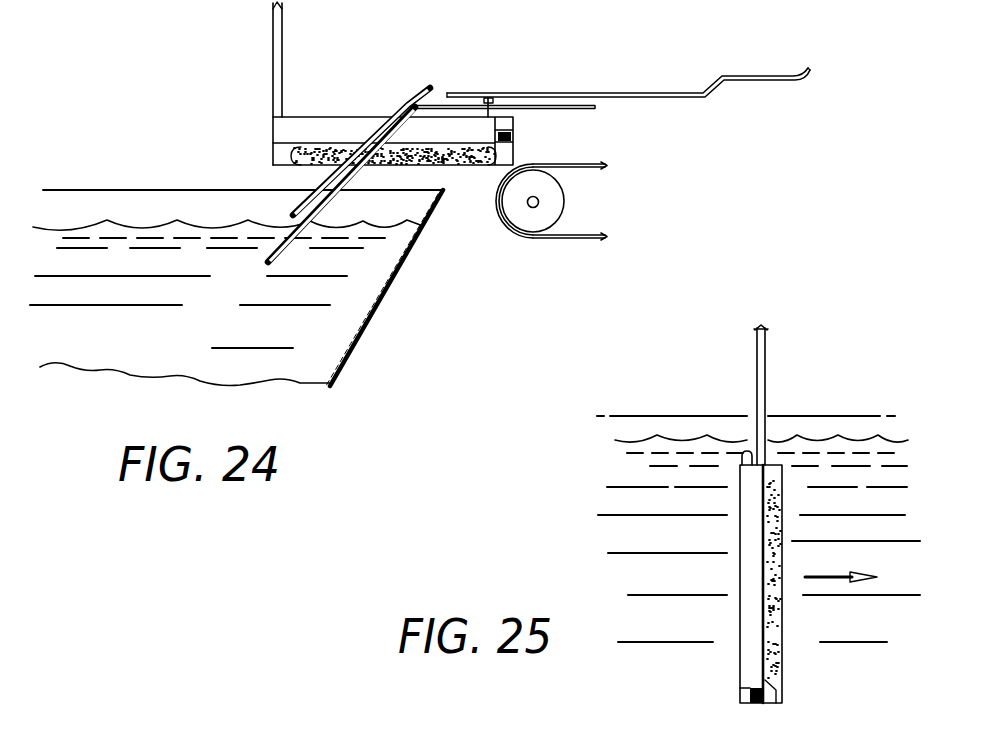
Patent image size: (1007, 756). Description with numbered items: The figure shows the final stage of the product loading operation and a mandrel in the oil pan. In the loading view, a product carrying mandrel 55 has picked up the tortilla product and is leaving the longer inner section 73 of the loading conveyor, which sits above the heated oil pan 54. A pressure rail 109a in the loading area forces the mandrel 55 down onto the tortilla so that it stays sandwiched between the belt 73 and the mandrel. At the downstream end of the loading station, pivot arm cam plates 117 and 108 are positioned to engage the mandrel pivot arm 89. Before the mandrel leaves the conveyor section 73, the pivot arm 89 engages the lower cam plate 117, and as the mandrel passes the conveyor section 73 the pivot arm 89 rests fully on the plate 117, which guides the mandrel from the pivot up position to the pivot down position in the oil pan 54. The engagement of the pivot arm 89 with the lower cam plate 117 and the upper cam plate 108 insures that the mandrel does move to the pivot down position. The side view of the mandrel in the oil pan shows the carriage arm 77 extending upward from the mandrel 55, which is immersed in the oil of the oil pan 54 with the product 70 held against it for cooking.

In FIG. 24, the heated oil pan 54 is at (320, 322).
In FIG. 25, the heated oil pan 54 is at (640, 535).
In FIG. 24, the product carrying mandrel 55 is at (320, 125).
In FIG. 25, the product carrying mandrel 55 is at (743, 653).
In FIG. 24, the longer inner section of the loading conveyor 73 is at (575, 163).
In FIG. 25, the carriage arm 77 is at (762, 382).
In FIG. 24, the mandrel pivot arm 89 is at (488, 97).
In FIG. 24, the upper pivot arm cam plate 108 is at (397, 97).
In FIG. 24, the pressure rail 109a is at (658, 92).
In FIG. 24, the lower pivot arm cam plate 117 is at (300, 253).
In FIG. 25, the product 70 is at (782, 653).